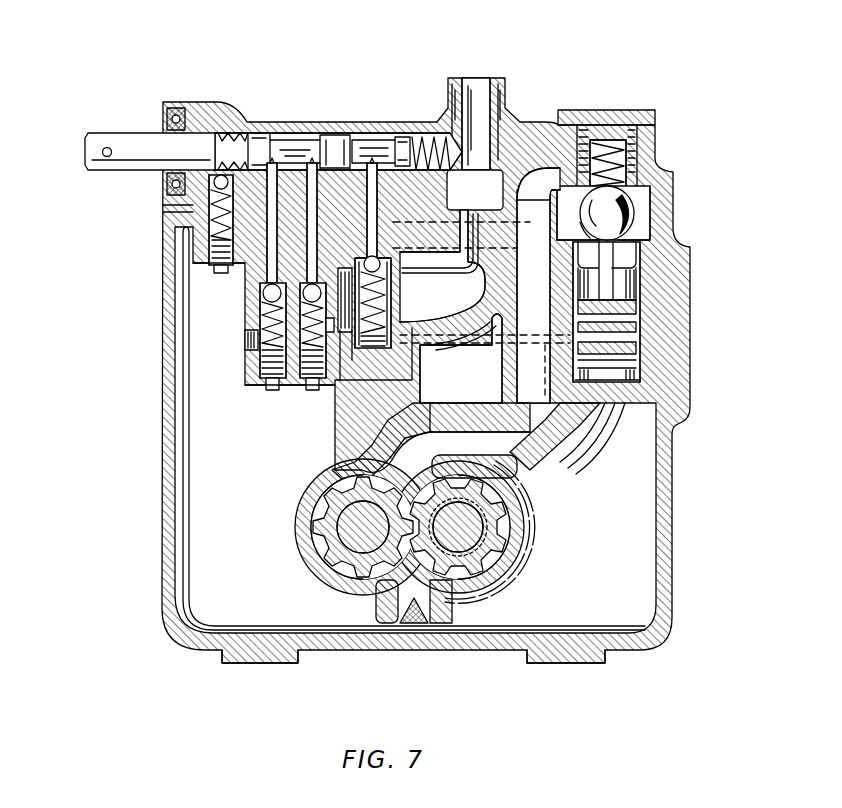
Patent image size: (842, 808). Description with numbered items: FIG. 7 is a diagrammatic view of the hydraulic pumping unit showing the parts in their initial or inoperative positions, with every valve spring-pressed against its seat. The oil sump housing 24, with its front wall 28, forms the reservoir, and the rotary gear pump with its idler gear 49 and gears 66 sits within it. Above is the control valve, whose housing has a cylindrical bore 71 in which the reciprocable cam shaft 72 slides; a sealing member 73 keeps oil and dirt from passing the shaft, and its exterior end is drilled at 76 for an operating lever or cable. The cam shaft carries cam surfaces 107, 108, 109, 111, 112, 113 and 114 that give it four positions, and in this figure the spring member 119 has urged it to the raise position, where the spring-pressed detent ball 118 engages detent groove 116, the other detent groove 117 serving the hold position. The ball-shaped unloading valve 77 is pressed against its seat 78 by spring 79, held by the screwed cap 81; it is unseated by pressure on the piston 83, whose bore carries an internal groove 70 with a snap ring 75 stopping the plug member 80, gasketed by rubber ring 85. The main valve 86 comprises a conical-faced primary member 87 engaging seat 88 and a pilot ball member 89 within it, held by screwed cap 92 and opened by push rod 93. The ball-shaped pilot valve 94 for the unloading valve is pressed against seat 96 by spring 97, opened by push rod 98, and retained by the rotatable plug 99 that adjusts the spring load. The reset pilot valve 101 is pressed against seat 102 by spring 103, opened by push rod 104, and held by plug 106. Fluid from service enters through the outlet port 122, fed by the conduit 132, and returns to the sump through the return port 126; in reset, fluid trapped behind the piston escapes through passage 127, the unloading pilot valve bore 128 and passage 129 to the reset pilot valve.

The housing 24 is at (390, 648).
The front wall 28 is at (172, 265).
The idler gear 49 is at (520, 513).
The pump gears 66 is at (480, 540).
The internal groove 70 is at (598, 395).
The cylindrical bore 71 is at (372, 127).
The cam shaft 72 is at (205, 140).
The sealing member 73 is at (178, 122).
The snap ring 75 is at (612, 395).
The drilled hole 76 is at (110, 146).
The unloading valve 77 is at (615, 200).
The seat 78 is at (590, 220).
The spring 79 is at (622, 150).
The plug member 80 is at (618, 390).
The screwed cap 81 is at (618, 115).
The piston 83 is at (625, 300).
The rubber ring 85 is at (632, 345).
The main valve 86 is at (397, 299).
The primary member 87 is at (432, 305).
The seat 88 is at (396, 268).
The pilot ball member 89 is at (393, 286).
The screwed cap 92 is at (377, 378).
The push rod 93 is at (372, 200).
The pilot valve 94 is at (250, 340).
The seat 96 is at (346, 300).
The spring 97 is at (347, 330).
The push rod 98 is at (215, 183).
The rotatable plug 99 is at (305, 395).
The reset pilot valve 101 is at (272, 304).
The seat 102 is at (278, 292).
The spring 103 is at (262, 345).
The push rod 104 is at (243, 253).
The plug 106 is at (272, 375).
The cam surface 107 is at (268, 130).
The cam surface 108 is at (292, 148).
The cam surface 109 is at (317, 146).
The cam surface 111 is at (339, 140).
The cam surface 112 is at (361, 138).
The cam surface 113 is at (390, 137).
The cam surface 114 is at (402, 146).
The detent groove 116 is at (220, 128).
The detent groove 117 is at (245, 128).
The detent ball 118 is at (163, 210).
The spring member 119 is at (425, 140).
The outlet port 122 is at (505, 103).
The return port 126 is at (620, 258).
The passage 127 is at (538, 285).
The unloading pilot valve bore 128 is at (328, 355).
The passage 129 is at (291, 395).
The conduit 132 is at (481, 90).